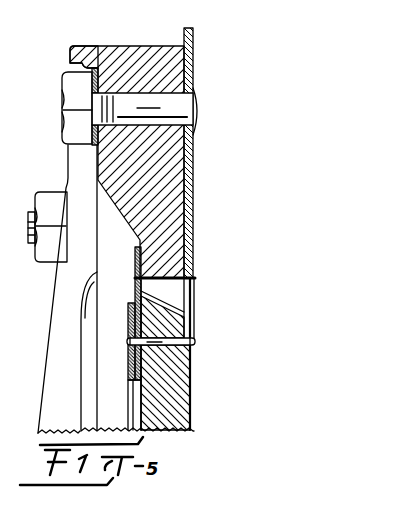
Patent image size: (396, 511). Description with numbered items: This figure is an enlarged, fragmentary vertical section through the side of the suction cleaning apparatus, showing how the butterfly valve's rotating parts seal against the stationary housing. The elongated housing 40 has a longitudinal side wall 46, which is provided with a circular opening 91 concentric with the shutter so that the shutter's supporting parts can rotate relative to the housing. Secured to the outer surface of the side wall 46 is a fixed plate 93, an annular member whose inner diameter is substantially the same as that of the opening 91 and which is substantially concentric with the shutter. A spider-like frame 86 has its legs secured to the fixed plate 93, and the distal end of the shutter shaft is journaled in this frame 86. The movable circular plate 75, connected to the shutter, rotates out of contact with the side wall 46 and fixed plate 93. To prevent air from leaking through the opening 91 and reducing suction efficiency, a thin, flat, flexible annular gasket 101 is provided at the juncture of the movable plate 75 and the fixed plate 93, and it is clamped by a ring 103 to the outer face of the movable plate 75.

The elongated housing 40 is at (184, 34).
The side wall 46 is at (189, 213).
The movable plate 75 is at (178, 388).
The frame 86 is at (62, 340).
The circular opening 91 is at (187, 289).
The fixed plate 93 is at (90, 50).
The gasket 101 is at (136, 279).
The ring 103 is at (128, 372).